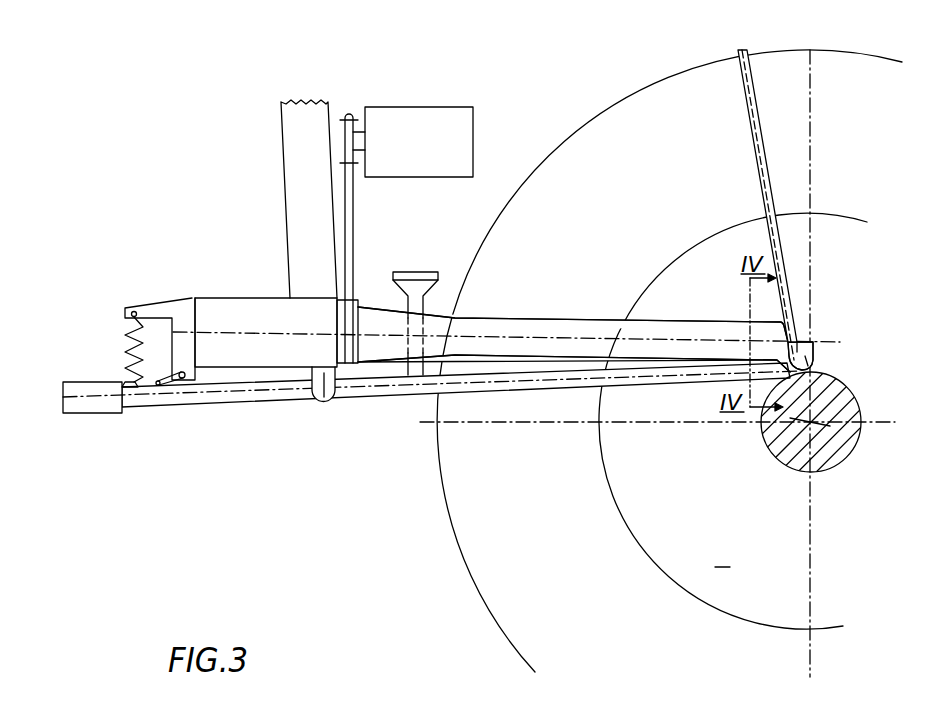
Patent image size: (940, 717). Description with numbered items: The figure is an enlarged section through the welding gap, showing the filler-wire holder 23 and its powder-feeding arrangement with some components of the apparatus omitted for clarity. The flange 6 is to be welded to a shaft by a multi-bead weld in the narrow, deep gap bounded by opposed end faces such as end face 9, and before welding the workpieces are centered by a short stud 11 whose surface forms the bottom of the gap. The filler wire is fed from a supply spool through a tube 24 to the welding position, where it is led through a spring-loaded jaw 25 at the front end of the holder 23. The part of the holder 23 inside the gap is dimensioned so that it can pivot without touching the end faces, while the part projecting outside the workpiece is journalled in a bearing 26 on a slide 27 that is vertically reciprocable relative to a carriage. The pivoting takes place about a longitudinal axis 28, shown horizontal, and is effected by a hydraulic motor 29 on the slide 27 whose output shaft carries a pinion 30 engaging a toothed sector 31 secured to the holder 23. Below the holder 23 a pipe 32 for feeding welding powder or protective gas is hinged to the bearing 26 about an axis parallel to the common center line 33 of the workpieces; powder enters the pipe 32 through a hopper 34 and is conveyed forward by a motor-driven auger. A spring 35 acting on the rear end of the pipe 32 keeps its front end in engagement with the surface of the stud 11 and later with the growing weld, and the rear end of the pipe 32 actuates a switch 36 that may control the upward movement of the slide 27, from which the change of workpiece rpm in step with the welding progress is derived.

The flange 6 is at (572, 135).
The end face 9 is at (725, 554).
The stud 11 is at (833, 455).
The holder 23 is at (655, 327).
The tube 24 is at (753, 100).
The spring-loaded jaw 25 is at (810, 348).
The bearing 26 is at (218, 310).
The slide 27 is at (297, 175).
The longitudinal axis 28 is at (558, 320).
The hydraulic motor 29 is at (460, 133).
The pinion 30 is at (347, 120).
The toothed sector 31 is at (350, 237).
The pipe 32 is at (483, 383).
The common center line 33 is at (810, 423).
The hopper 34 is at (417, 280).
The spring 35 is at (130, 338).
The switch 36 is at (183, 377).